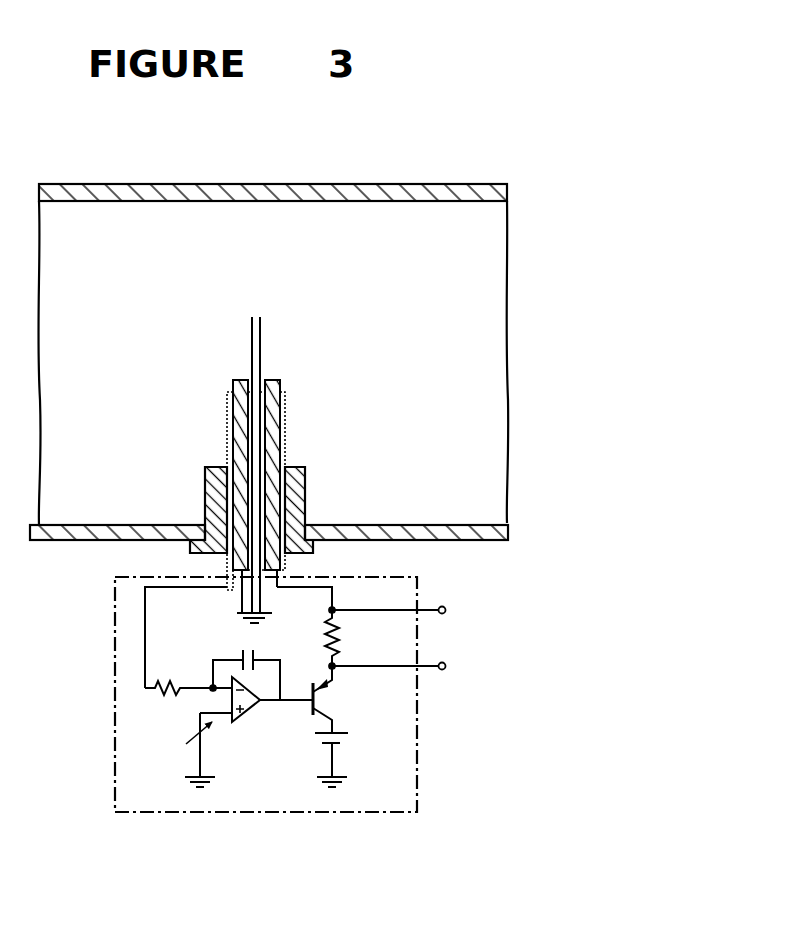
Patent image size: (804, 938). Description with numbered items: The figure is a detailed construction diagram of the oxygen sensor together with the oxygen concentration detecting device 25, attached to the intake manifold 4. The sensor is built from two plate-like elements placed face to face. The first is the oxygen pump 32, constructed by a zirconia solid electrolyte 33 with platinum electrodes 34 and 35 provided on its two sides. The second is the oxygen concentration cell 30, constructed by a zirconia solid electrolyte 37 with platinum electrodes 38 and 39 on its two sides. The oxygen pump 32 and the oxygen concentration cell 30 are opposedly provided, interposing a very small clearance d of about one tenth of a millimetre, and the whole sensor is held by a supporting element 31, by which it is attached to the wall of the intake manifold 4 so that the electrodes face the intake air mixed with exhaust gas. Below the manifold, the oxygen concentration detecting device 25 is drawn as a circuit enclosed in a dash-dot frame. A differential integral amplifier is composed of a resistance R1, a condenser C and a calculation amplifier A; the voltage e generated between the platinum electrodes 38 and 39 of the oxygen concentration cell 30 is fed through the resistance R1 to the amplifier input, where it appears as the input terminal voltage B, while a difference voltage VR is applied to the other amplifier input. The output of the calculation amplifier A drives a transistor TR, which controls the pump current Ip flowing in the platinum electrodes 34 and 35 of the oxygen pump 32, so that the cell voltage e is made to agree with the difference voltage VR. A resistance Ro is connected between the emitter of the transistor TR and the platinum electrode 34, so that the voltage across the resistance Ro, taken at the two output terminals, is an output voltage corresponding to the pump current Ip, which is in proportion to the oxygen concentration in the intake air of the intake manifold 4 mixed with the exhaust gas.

The intake manifold 4 is at (362, 190).
The oxygen concentration detecting device 25 is at (115, 697).
The oxygen concentration cell 30 is at (176, 471).
The supporting element 31 is at (304, 494).
The oxygen pump 32 is at (331, 466).
The solid electrolyte 33 is at (278, 380).
The platinum electrode 34 is at (283, 408).
The platinum electrode 35 is at (307, 481).
The solid electrolyte 37 is at (242, 380).
The platinum electrode 38 is at (233, 398).
The platinum electrode 39 is at (212, 481).
The clearance d is at (290, 330).
The voltage e is at (240, 612).
The pump current Ip is at (299, 604).
The resistance Ro is at (385, 638).
The resistance R1 is at (188, 674).
The condenser C is at (246, 666).
The calculation amplifier A is at (252, 713).
The input terminal voltage B is at (213, 686).
The difference voltage VR is at (184, 750).
The transistor TR is at (346, 699).